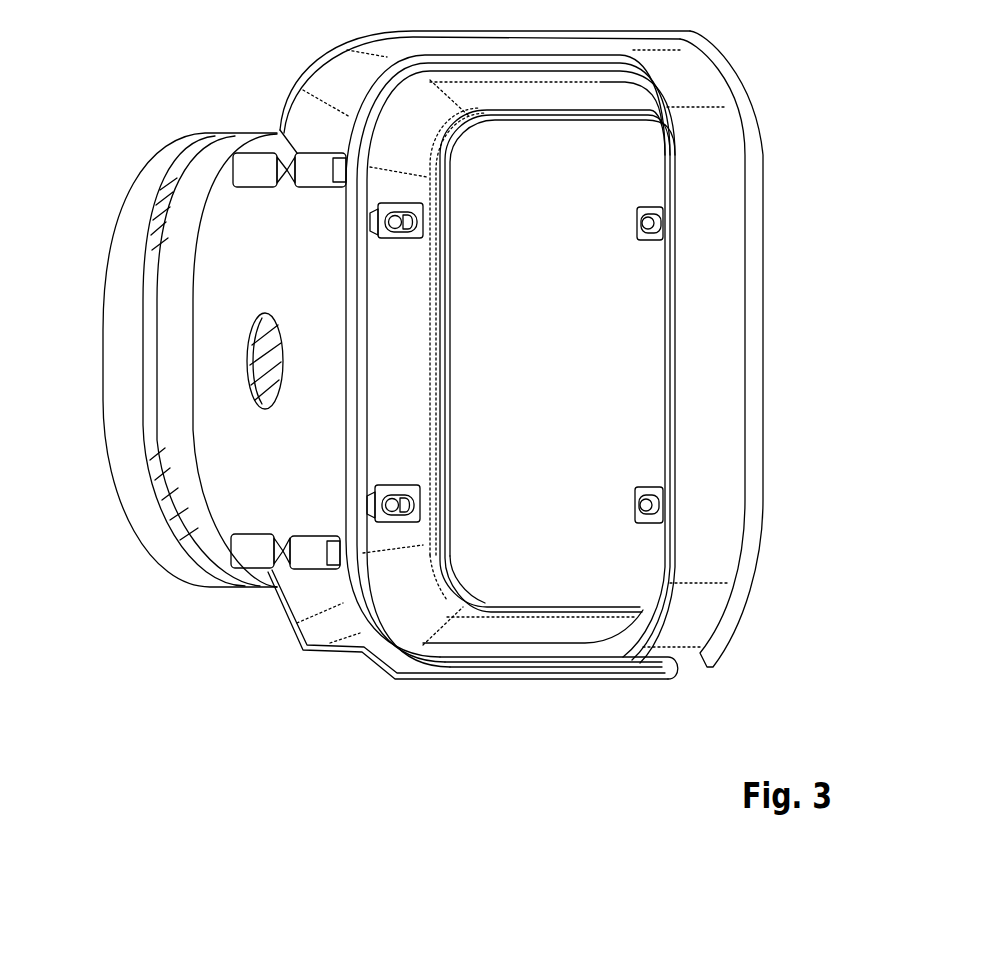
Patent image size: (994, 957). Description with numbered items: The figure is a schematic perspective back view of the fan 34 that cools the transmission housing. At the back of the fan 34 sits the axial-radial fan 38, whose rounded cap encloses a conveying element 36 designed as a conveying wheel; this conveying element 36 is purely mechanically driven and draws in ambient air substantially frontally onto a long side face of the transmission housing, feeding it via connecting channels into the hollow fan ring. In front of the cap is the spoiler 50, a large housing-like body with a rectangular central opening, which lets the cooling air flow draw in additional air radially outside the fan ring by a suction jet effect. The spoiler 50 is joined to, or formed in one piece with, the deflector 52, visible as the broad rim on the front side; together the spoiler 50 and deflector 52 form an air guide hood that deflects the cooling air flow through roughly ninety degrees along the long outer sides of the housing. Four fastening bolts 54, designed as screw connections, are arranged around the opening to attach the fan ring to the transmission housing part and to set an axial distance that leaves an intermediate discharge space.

The fan 34 is at (148, 100).
The conveying element 36 is at (258, 362).
The axial-radial fan 38 is at (106, 266).
The spoiler 50 is at (517, 680).
The deflector 52 is at (727, 163).
The fastening bolts 54 is at (426, 219).